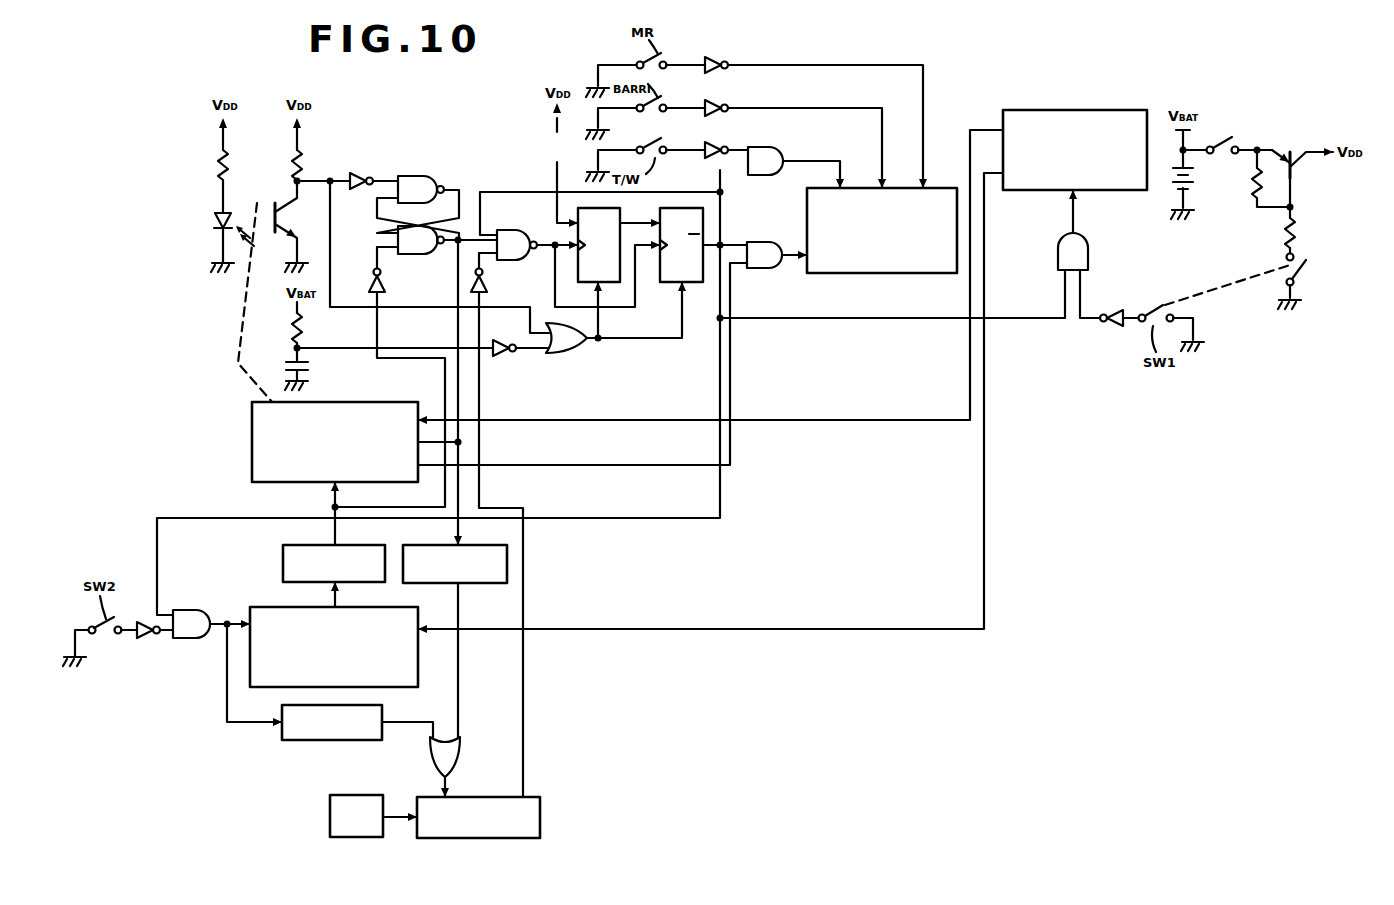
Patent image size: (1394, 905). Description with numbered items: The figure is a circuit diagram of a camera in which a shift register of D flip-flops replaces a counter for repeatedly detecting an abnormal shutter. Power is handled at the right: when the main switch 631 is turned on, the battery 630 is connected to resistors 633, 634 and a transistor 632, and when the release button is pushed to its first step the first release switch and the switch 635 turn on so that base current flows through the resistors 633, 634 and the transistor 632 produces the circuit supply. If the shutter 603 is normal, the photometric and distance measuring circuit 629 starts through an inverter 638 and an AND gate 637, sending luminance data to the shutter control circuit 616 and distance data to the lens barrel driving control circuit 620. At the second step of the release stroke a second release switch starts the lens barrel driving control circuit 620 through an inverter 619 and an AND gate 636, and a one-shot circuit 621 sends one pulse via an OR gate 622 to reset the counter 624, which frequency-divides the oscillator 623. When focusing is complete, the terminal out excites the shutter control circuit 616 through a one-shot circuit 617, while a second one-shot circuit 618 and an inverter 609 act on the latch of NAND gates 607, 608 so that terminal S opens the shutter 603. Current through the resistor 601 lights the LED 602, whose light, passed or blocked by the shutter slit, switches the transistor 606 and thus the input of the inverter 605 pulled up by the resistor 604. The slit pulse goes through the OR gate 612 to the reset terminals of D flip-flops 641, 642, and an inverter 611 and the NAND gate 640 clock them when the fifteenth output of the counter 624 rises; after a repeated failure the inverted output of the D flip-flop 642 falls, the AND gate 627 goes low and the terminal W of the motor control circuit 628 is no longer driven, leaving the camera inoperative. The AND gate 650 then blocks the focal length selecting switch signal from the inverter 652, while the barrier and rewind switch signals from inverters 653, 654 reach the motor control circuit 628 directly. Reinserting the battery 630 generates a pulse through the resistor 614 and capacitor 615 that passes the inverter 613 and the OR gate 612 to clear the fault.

The resistor 601 is at (217, 160).
The LED 602 is at (212, 223).
The shutter 603 is at (257, 203).
The resistor 604 is at (306, 153).
The inverter 605 is at (364, 172).
The transistor 606 is at (275, 203).
The NAND gate 607 is at (416, 176).
The NAND gate 608 is at (418, 255).
The inverter 609 is at (374, 270).
The inverter 611 is at (483, 273).
The OR gate 612 is at (566, 354).
The inverter 613 is at (501, 357).
The resistor 614 is at (304, 326).
The capacitor 615 is at (309, 368).
The shutter control circuit 616 is at (252, 441).
The one-shot circuit 617 is at (283, 548).
The one-shot circuit 618 is at (489, 584).
The inverter 619 is at (146, 640).
The lens barrel driving control circuit 620 is at (263, 607).
The one-shot circuit 621 is at (291, 741).
The OR gate 622 is at (461, 756).
The oscillator 623 is at (330, 818).
The counter 624 is at (541, 800).
The AND gate 627 is at (760, 242).
The motor control circuit 628 is at (839, 273).
The photometric and distance measuring circuit 629 is at (1030, 110).
The battery 630 is at (1174, 185).
The switch 631 is at (1230, 136).
The transistor 632 is at (1290, 152).
The resistor 633 is at (1252, 192).
The resistor 634 is at (1285, 232).
The switch 635 is at (1308, 272).
The AND gate 636 is at (190, 638).
The AND gate 637 is at (1058, 262).
The inverter 638 is at (1113, 327).
The NAND gate 640 is at (510, 230).
The D flip-flop 641 is at (578, 268).
The D flip-flop 642 is at (698, 283).
The AND gate 650 is at (774, 150).
The inverter 652 is at (716, 142).
The inverter 653 is at (716, 100).
The inverter 654 is at (713, 57).